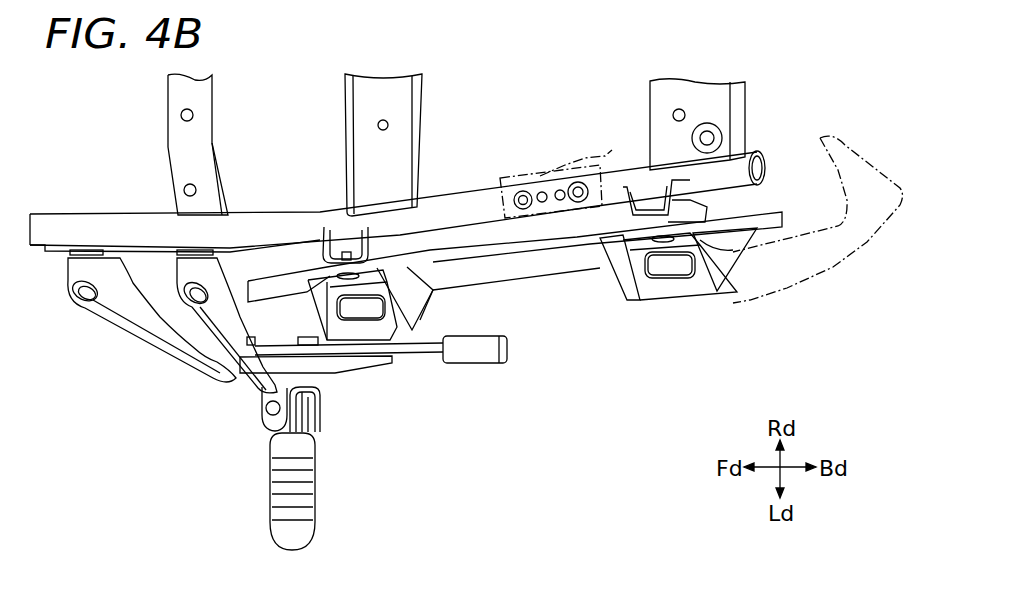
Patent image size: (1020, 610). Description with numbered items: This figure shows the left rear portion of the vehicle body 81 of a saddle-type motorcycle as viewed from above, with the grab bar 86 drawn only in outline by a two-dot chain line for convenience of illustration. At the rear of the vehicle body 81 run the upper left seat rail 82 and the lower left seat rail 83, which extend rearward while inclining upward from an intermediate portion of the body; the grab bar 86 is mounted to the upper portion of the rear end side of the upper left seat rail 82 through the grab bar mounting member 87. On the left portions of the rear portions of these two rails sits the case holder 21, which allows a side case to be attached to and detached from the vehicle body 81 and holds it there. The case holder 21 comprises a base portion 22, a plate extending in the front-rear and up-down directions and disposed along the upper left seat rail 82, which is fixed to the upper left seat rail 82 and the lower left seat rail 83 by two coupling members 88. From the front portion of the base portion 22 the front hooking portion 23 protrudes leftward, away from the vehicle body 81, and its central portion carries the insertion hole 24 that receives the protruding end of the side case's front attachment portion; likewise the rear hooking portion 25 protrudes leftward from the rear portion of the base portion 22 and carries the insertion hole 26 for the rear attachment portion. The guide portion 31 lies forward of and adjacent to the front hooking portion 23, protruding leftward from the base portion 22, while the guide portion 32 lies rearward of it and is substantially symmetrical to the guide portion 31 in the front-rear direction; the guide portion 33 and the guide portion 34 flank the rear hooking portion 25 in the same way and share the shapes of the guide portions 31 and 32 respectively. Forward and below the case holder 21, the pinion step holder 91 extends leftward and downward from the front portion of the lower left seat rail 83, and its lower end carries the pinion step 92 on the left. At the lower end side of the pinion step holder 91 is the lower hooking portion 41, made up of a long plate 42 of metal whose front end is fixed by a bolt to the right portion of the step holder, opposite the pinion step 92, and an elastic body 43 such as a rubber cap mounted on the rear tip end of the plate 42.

The case holder 21 is at (512, 329).
The base portion 22 is at (500, 272).
The front hooking portion 23 is at (352, 340).
The insertion hole 24 is at (367, 330).
The rear hooking portion 25 is at (665, 287).
The insertion hole 26 is at (680, 270).
The guide portion 31 is at (310, 298).
The guide portion 32 is at (420, 293).
The guide portion 33 is at (621, 278).
The guide portion 34 is at (720, 268).
The lower hooking portion 41 is at (381, 391).
The plate 42 is at (414, 356).
The elastic body 43 is at (477, 360).
The vehicle body 81 is at (277, 138).
The upper left seat rail 82 is at (128, 218).
The lower left seat rail 83 is at (50, 252).
The grab bar 86 is at (867, 150).
The grab bar mounting member 87 is at (545, 178).
The coupling members 88 is at (322, 257).
The pinion step holder 91 is at (150, 350).
The pinion step 92 is at (270, 488).